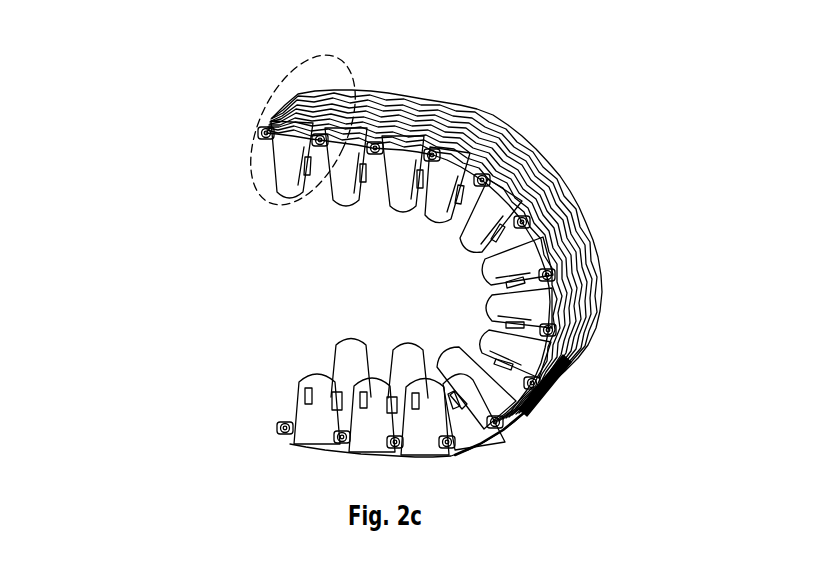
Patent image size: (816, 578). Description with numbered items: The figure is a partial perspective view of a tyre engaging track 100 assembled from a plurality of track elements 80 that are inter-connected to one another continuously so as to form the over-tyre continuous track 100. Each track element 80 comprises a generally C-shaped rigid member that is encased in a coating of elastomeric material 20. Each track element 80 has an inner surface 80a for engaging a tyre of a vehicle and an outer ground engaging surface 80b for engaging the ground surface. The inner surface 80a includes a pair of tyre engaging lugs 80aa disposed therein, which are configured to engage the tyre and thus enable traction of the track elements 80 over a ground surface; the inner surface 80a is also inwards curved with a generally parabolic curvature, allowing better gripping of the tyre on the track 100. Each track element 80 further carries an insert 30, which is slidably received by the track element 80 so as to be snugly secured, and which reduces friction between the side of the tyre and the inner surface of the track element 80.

The tyre engaging track 100 is at (143, 182).
The coating of elastomeric material 20 is at (283, 142).
The insert 30 is at (410, 368).
The track element 80 is at (362, 82).
The inner surface 80a is at (338, 407).
The tyre engaging lugs 80aa is at (332, 392).
The outer ground engaging surface 80b is at (292, 102).